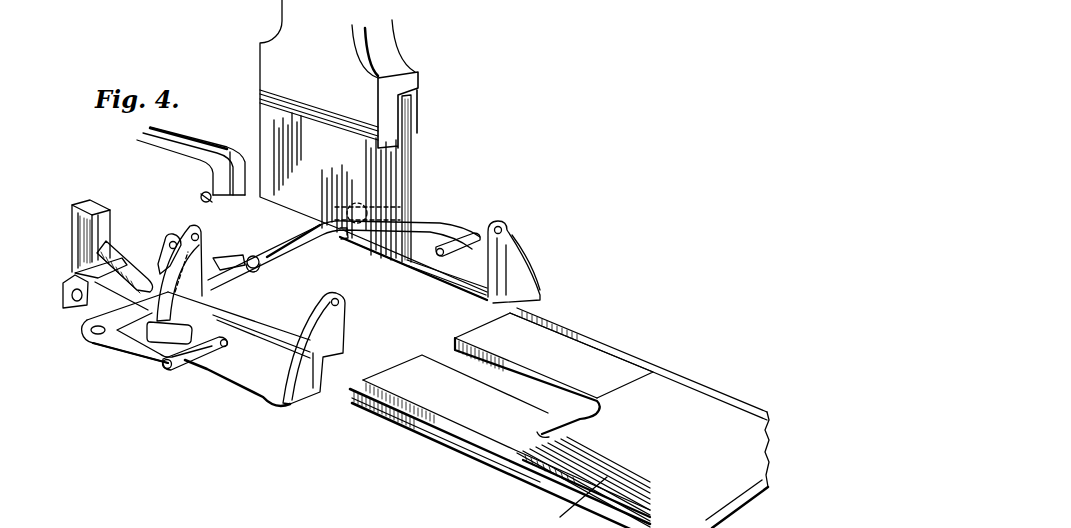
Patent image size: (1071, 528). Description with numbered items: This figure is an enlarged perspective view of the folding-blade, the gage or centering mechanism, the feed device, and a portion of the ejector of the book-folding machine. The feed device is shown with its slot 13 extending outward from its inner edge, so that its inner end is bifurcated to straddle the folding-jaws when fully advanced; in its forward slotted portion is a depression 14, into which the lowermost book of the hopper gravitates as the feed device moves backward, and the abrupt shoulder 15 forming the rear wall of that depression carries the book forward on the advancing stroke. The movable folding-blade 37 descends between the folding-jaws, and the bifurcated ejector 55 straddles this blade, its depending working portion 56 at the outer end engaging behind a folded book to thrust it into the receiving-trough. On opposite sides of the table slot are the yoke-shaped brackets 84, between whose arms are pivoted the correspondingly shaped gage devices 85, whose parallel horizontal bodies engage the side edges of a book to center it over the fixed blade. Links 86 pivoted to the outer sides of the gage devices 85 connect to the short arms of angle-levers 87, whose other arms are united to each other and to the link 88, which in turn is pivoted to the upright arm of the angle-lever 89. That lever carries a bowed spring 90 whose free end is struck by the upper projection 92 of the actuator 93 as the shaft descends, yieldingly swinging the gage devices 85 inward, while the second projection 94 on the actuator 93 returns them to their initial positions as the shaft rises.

The slot 13 is at (535, 396).
The depression 14 is at (490, 423).
The abrupt shoulder 15 is at (628, 423).
The folding-blade 37 is at (393, 180).
The ejector 55 is at (163, 147).
The depending working portion 56 is at (206, 200).
The yoke-shaped bracket 84 is at (243, 380).
The gage device 85 is at (264, 330).
The link 86 is at (187, 360).
The angle-lever 87 is at (112, 343).
The link 88 is at (214, 255).
The angle-lever 89 is at (158, 283).
The bowed spring 90 is at (87, 320).
The upper projection 92 is at (93, 203).
The actuator 93 is at (88, 237).
The second projection 94 is at (75, 273).